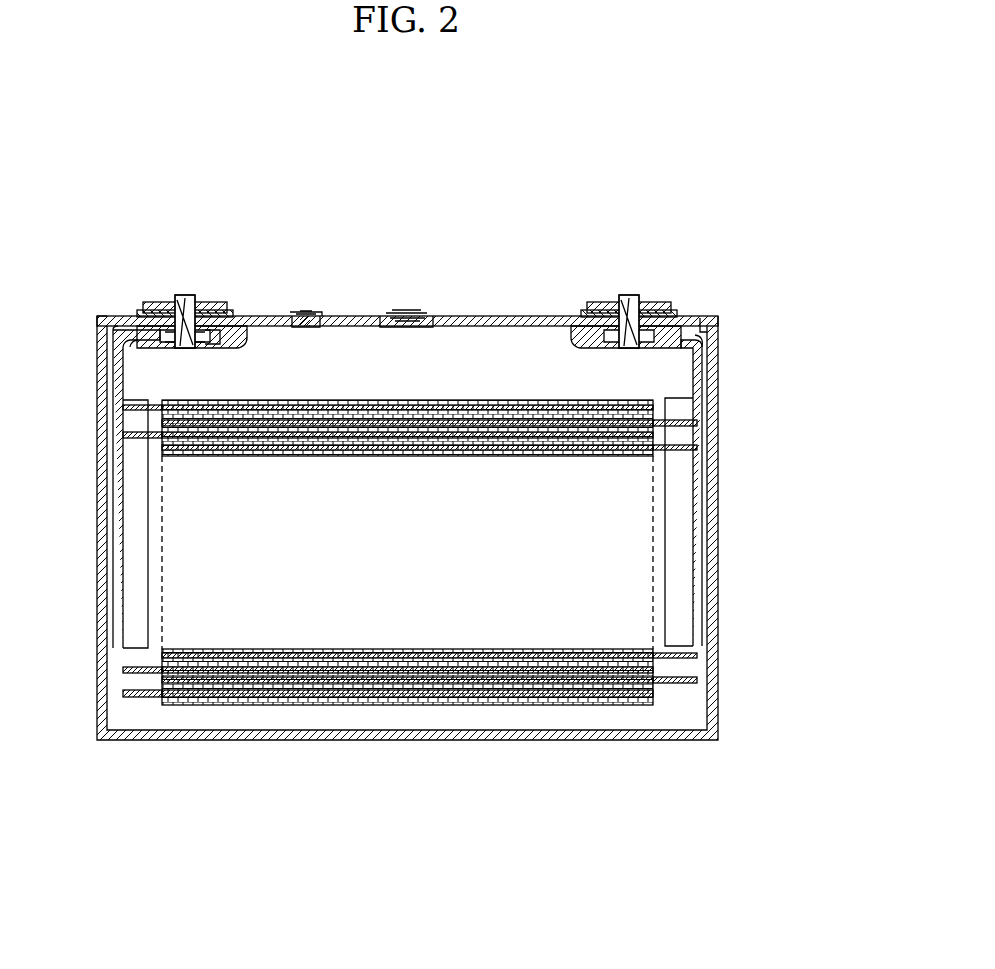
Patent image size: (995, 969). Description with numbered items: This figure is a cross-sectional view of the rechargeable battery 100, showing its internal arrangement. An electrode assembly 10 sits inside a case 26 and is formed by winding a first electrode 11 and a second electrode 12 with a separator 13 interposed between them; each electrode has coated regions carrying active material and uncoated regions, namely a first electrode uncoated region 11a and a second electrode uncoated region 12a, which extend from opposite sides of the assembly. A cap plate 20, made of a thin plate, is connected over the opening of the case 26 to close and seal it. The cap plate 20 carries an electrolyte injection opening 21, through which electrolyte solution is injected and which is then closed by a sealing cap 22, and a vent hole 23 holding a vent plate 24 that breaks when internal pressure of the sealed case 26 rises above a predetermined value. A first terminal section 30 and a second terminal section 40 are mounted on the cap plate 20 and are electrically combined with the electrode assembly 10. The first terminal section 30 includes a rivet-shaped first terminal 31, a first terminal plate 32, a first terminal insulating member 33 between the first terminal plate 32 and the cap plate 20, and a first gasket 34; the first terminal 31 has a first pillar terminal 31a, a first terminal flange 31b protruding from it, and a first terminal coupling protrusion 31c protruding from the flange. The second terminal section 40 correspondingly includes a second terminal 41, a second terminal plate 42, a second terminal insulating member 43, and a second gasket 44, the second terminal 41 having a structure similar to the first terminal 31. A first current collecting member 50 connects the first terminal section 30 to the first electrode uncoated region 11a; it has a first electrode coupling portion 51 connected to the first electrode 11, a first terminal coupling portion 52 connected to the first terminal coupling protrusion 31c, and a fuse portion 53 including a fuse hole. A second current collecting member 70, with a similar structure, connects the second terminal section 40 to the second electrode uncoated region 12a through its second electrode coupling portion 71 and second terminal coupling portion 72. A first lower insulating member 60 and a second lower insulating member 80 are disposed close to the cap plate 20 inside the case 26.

The rechargeable battery 100 is at (428, 156).
The electrode assembly 10 is at (410, 604).
The first electrode 11 is at (215, 707).
The first electrode uncoated region 11a is at (135, 702).
The second electrode 12 is at (283, 707).
The second electrode uncoated region 12a is at (672, 684).
The separator 13 is at (405, 707).
The cap plate 20 is at (462, 315).
The electrolyte injection opening 21 is at (297, 328).
The sealing cap 22 is at (301, 314).
The vent hole 23 is at (399, 328).
The vent plate 24 is at (404, 314).
The case 26 is at (716, 600).
The first terminal section 30 is at (226, 365).
The first terminal 31 is at (184, 300).
The first pillar terminal 31a is at (190, 348).
The first terminal flange 31b is at (205, 348).
The first terminal coupling protrusion 31c is at (180, 348).
The first terminal plate 32 is at (222, 300).
The first terminal insulating member 33 is at (260, 300).
The first gasket 34 is at (152, 300).
The second terminal section 40 is at (638, 274).
The second terminal 41 is at (623, 294).
The second terminal plate 42 is at (646, 300).
The second terminal insulating member 43 is at (680, 300).
The second gasket 44 is at (592, 300).
The first current collecting member 50 is at (111, 433).
The first electrode coupling portion 51 is at (135, 527).
The first terminal coupling portion 52 is at (120, 358).
The fuse portion 53 is at (120, 348).
The first lower insulating member 60 is at (108, 338).
The second current collecting member 70 is at (706, 473).
The second electrode coupling portion 71 is at (678, 554).
The second terminal coupling portion 72 is at (700, 372).
The second lower insulating member 80 is at (703, 329).